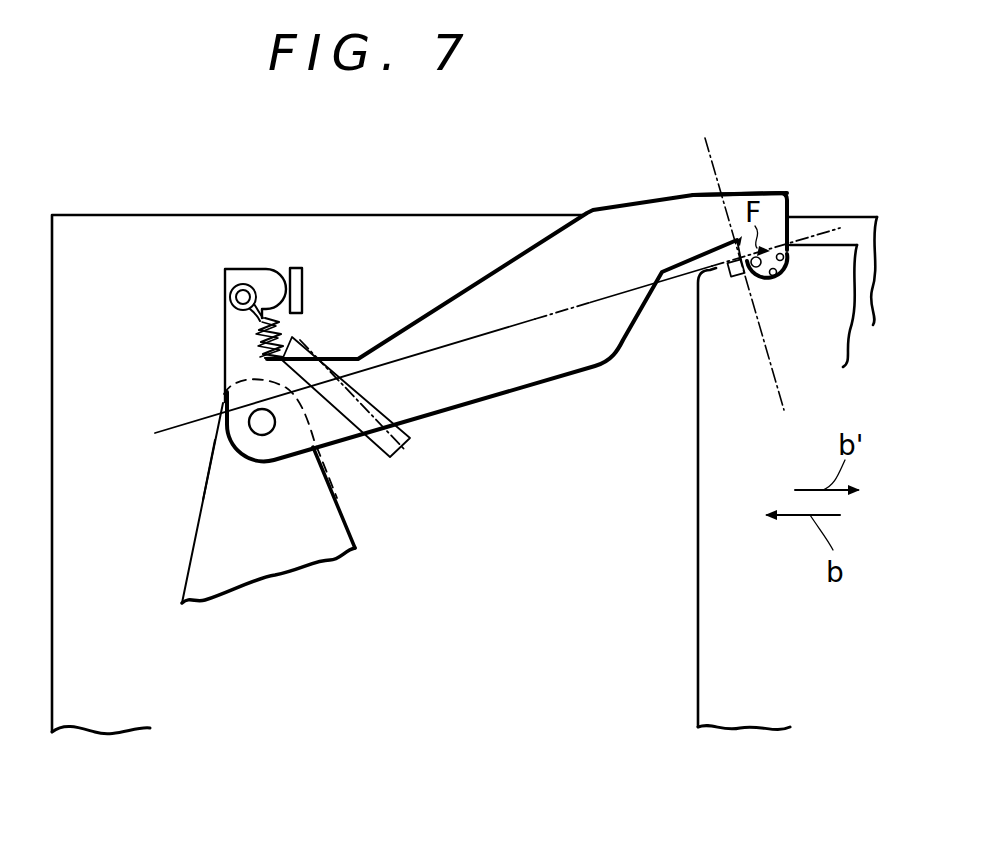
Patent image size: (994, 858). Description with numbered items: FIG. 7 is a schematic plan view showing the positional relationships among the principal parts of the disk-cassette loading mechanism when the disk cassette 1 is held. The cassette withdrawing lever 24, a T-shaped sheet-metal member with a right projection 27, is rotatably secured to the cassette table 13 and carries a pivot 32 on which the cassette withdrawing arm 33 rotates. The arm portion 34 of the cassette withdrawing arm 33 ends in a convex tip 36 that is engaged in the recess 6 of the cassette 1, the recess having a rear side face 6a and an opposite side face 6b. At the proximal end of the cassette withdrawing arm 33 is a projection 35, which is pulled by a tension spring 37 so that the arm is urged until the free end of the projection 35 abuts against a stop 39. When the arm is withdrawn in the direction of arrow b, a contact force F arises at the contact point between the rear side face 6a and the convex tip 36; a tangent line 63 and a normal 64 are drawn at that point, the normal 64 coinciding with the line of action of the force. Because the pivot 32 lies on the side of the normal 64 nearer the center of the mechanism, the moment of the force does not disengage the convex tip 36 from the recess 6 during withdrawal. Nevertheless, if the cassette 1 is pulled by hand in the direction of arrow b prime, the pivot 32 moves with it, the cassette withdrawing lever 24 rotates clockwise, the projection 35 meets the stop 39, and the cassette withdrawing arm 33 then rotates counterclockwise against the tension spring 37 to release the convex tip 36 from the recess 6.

The disk cassette 1 is at (697, 575).
The recess 6 is at (782, 277).
The rear side face 6a is at (743, 277).
The side face 6b is at (790, 267).
The cassette table 13 is at (145, 214).
The cassette withdrawing lever 24 is at (193, 532).
The right projection 27 is at (220, 477).
The pivot 32 is at (258, 418).
The cassette withdrawing arm 33 is at (530, 252).
The arm portion 34 is at (495, 280).
The projection 35 is at (232, 318).
The convex tip 36 is at (762, 285).
The tension spring 37 is at (260, 340).
The stop 39 is at (296, 268).
The tangent line 63 is at (713, 158).
The normal 64 is at (520, 340).